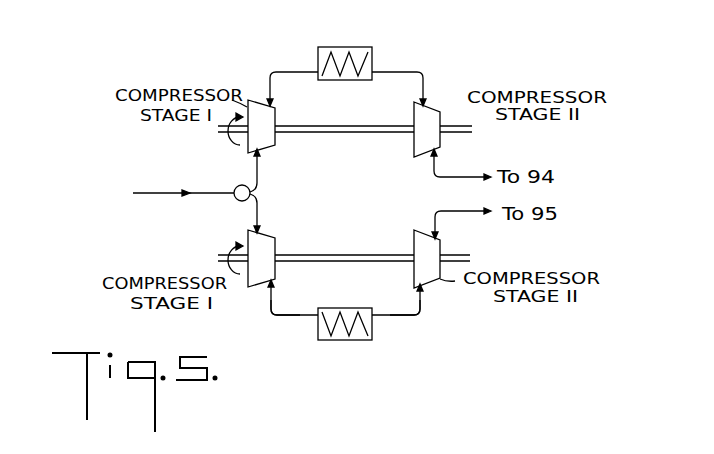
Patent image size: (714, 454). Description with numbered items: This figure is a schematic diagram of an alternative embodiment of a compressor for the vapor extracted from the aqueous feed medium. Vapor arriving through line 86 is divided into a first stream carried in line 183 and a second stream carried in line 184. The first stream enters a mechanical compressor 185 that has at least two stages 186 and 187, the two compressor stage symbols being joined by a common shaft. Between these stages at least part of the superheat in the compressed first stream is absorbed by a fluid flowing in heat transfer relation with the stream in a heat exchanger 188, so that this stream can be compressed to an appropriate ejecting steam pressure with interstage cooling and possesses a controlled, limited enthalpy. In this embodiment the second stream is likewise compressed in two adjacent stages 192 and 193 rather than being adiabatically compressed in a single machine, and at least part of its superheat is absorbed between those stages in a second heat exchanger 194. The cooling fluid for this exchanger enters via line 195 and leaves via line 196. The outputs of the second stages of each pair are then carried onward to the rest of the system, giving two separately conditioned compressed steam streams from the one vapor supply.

The line 86 is at (146, 188).
The line 183 is at (258, 181).
The line 184 is at (258, 215).
The mechanical compressor 185 is at (355, 133).
The stage 186 is at (250, 150).
The stage 187 is at (440, 140).
The heat exchanger 188 is at (364, 47).
The stage 192 is at (275, 272).
The stage 193 is at (440, 245).
The heat exchanger 194 is at (330, 340).
The line 195 is at (269, 316).
The line 196 is at (412, 318).